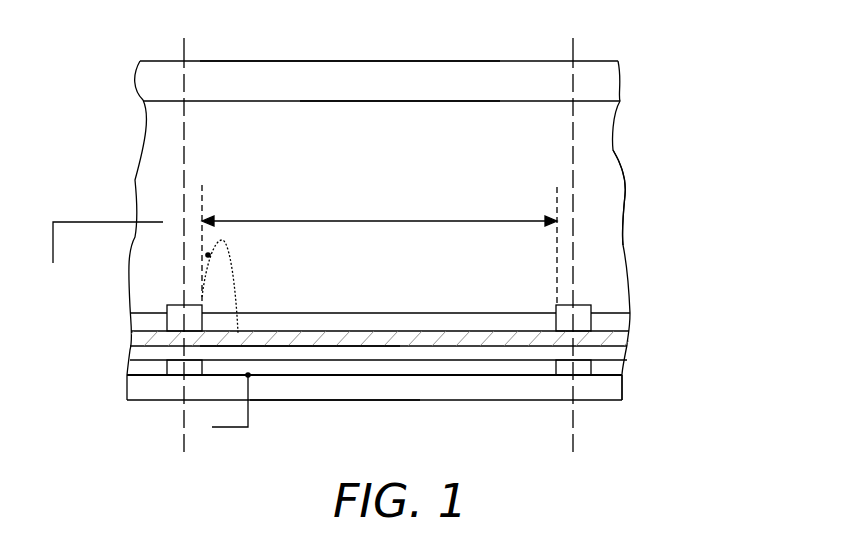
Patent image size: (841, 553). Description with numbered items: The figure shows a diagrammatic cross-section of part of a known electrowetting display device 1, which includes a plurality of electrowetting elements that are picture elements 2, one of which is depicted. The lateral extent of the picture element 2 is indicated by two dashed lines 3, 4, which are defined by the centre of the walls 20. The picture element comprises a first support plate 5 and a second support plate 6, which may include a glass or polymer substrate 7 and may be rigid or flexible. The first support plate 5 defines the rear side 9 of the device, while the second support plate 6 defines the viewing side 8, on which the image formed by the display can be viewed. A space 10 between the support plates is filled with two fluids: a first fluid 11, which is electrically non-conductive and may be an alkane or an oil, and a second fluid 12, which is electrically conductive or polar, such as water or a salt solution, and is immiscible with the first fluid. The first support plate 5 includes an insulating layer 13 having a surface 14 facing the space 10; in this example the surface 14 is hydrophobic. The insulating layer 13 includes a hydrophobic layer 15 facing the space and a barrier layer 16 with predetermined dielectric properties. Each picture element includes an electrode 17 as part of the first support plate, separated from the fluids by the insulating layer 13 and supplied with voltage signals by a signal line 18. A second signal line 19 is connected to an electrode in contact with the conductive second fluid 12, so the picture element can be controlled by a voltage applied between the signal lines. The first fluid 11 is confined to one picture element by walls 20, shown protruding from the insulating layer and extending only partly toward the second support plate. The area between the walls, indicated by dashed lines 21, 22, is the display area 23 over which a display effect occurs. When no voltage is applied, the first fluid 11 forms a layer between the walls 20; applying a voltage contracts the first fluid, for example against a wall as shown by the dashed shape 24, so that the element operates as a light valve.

The electrowetting display device 1 is at (677, 31).
The picture element 2 is at (362, 21).
The dashed line 3 is at (186, 44).
The dashed line 4 is at (575, 44).
The first support plate 5 is at (680, 313).
The second support plate 6 is at (517, 71).
The substrate 7 is at (602, 390).
The viewing side 8 is at (275, 61).
The rear side 9 is at (340, 400).
The space 10 is at (445, 128).
The first fluid 11 is at (508, 320).
The second fluid 12 is at (618, 195).
The insulating layer 13 is at (634, 332).
The surface 14 is at (440, 331).
The hydrophobic layer 15 is at (371, 340).
The barrier layer 16 is at (303, 352).
The electrode 17 is at (448, 368).
The signal line 18 is at (231, 428).
The second signal line 19 is at (75, 222).
The walls 20 is at (177, 315).
The dashed line 21 is at (203, 188).
The dashed line 22 is at (556, 188).
The display area 23 is at (379, 209).
The dashed shape 24 is at (211, 255).